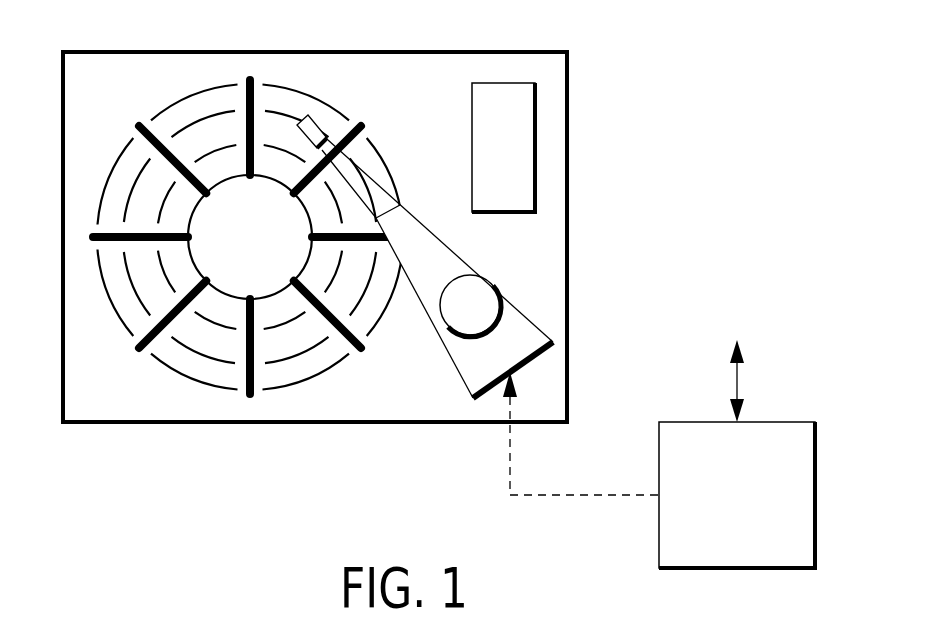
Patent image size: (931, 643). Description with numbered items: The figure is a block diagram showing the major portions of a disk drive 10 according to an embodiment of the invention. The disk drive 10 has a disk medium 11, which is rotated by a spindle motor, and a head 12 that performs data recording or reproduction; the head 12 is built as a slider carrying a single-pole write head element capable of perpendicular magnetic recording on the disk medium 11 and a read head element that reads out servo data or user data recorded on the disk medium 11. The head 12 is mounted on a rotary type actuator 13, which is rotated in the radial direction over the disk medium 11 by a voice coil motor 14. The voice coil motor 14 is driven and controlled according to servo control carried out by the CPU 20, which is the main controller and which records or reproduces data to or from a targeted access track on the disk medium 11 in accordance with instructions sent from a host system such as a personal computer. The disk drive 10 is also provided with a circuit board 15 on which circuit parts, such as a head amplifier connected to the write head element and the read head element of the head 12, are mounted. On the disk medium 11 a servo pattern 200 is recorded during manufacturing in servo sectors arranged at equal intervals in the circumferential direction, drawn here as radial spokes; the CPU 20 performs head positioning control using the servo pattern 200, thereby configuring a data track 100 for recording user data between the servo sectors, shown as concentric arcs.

The disk drive 10 is at (570, 205).
The disk medium 11 is at (250, 242).
The head 12 is at (320, 122).
The actuator 13 is at (432, 333).
The voice coil motor 14 is at (523, 328).
The circuit board 15 is at (537, 140).
The CPU 20 is at (659, 540).
The data track 100 is at (215, 358).
The servo pattern 200 is at (255, 373).